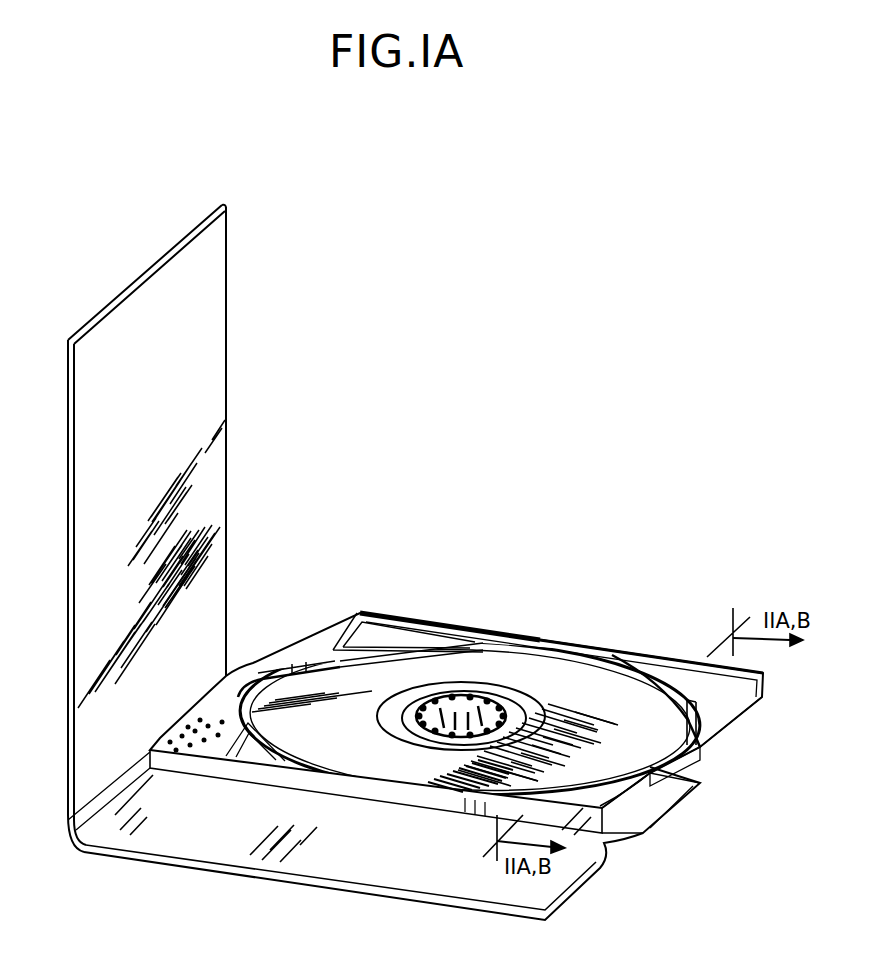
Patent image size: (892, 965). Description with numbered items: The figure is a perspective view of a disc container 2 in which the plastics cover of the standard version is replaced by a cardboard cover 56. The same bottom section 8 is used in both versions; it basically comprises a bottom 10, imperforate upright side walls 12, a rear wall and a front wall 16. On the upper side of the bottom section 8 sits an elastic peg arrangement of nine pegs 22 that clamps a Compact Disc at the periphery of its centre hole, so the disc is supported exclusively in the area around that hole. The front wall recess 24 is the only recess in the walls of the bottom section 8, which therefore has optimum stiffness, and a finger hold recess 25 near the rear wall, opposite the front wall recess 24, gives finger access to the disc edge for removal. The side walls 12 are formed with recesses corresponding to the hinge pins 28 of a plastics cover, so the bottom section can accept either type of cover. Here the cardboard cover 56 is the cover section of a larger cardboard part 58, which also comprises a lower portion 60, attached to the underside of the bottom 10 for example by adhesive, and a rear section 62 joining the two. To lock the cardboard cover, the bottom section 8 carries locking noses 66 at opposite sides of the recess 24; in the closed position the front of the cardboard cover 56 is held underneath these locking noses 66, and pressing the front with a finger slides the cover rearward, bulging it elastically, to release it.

The container 2 is at (592, 632).
The bottom section 8 is at (524, 642).
The bottom 10 is at (700, 740).
The upright side walls 12 is at (400, 626).
The front wall 16 is at (641, 792).
The pegs 22 is at (436, 744).
The front wall recess 24 is at (688, 760).
The finger hold recess 25 is at (469, 718).
The hinge pins 28 is at (152, 772).
The cardboard cover 56 is at (68, 508).
The cardboard part 58 is at (196, 876).
The lower portion 60 is at (380, 876).
The rear section 62 is at (79, 848).
The locking noses 66 is at (646, 766).